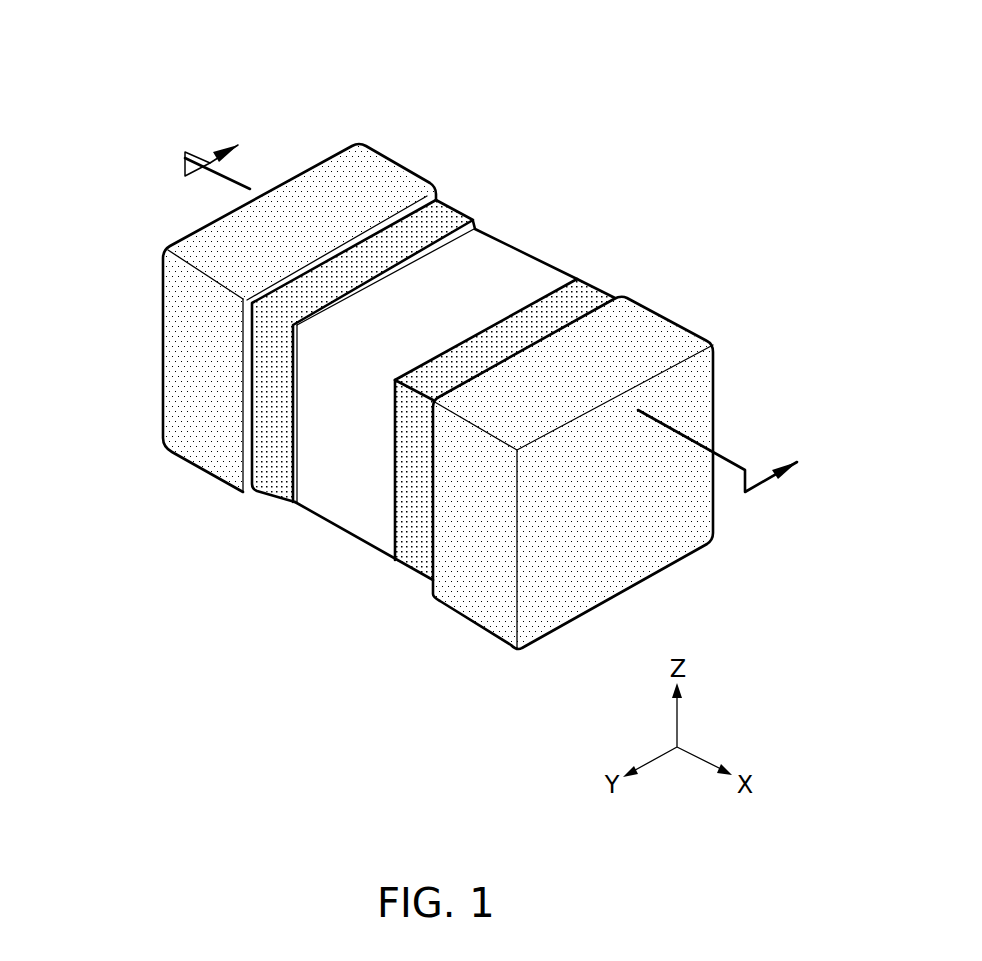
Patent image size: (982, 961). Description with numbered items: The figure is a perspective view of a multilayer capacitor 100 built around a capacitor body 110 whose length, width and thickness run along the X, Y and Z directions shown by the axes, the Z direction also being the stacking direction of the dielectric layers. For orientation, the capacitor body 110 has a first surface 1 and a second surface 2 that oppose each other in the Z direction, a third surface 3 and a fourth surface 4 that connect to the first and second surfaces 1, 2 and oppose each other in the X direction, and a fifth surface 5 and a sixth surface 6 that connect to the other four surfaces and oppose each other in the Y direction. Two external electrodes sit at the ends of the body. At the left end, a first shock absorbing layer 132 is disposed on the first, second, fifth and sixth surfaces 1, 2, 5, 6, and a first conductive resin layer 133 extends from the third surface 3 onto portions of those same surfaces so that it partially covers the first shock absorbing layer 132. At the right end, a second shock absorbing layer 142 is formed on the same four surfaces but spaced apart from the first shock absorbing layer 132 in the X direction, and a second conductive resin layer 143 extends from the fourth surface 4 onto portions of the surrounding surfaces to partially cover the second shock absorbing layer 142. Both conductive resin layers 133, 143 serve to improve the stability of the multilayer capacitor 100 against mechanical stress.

The multilayer capacitor 100 is at (457, 39).
The capacitor body 110 is at (485, 262).
The first surface 1 is at (380, 527).
The second surface 2 is at (425, 280).
The third surface 3 is at (310, 195).
The fourth surface 4 is at (650, 527).
The fifth surface 5 is at (350, 476).
The sixth surface 6 is at (508, 293).
The first shock absorbing layer 132 is at (282, 485).
The first conductive resin layer 133 is at (182, 383).
The second shock absorbing layer 142 is at (415, 560).
The second conductive resin layer 143 is at (665, 323).